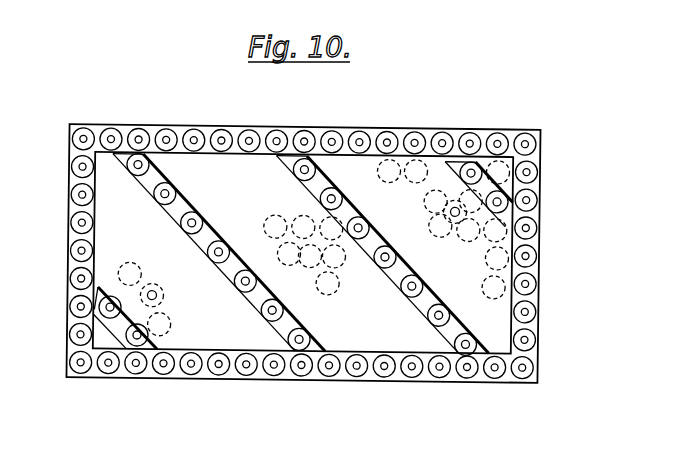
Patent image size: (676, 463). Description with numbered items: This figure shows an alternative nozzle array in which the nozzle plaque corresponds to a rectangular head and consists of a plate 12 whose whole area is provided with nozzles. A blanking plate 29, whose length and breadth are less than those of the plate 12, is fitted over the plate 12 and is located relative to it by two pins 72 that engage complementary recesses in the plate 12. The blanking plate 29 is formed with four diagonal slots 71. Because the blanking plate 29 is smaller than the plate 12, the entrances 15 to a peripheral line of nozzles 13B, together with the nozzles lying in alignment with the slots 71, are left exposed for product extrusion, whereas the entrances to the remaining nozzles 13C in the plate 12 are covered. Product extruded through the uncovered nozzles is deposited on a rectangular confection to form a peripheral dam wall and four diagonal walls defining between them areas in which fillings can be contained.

The plate 12 is at (485, 187).
The peripheral line of nozzles 13B is at (513, 347).
The remaining nozzles 13C is at (542, 271).
The entrances 15 is at (527, 232).
The blanking plate 29 is at (495, 313).
The diagonal slots 71 is at (277, 332).
The pins 72 is at (454, 207).